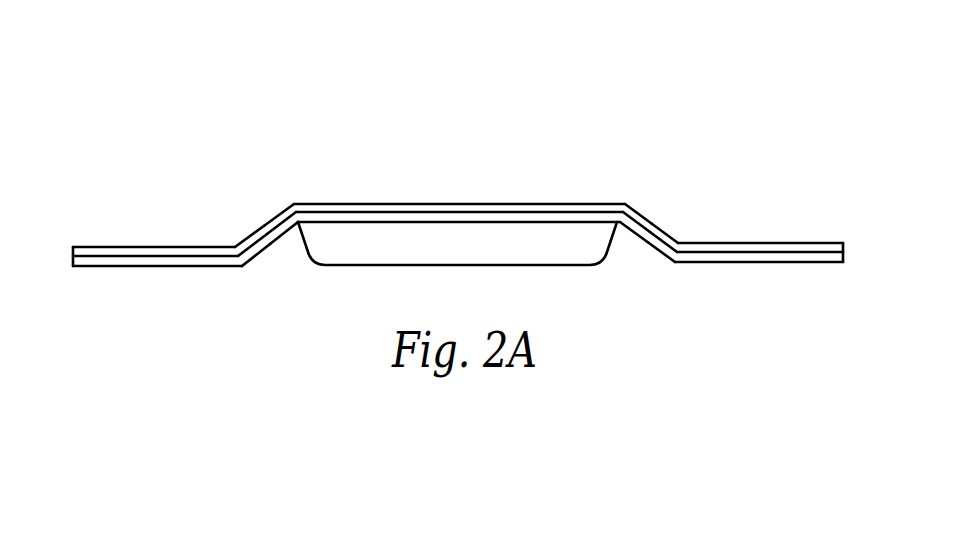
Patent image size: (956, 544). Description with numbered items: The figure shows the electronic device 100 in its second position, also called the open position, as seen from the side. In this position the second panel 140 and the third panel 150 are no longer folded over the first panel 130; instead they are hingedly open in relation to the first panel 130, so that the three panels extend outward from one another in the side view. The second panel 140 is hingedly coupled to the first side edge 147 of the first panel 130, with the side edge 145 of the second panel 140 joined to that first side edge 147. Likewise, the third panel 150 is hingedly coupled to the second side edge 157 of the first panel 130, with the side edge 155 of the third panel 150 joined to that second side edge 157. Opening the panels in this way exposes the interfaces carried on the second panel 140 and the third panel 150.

The device 100 is at (137, 90).
The first panel 130 is at (395, 210).
The second panel 140 is at (132, 246).
The side edge of the second panel 145 is at (268, 234).
The first side edge of the first panel 147 is at (266, 232).
The third panel 150 is at (764, 243).
The side edge of the third panel 155 is at (642, 240).
The second side edge of the first panel 157 is at (644, 232).